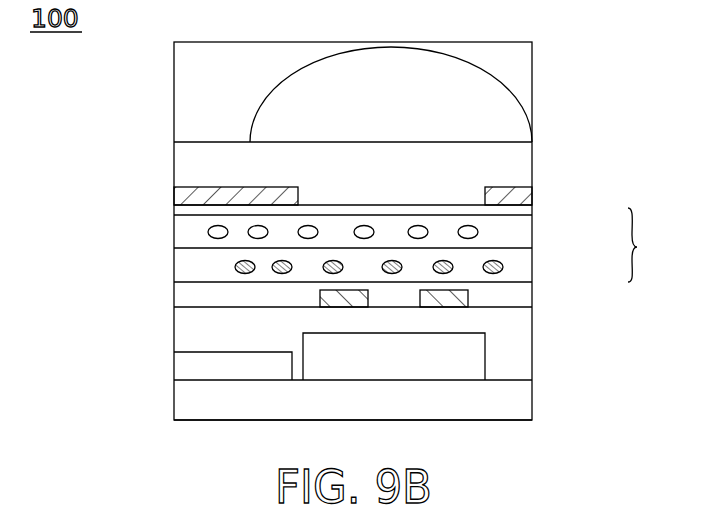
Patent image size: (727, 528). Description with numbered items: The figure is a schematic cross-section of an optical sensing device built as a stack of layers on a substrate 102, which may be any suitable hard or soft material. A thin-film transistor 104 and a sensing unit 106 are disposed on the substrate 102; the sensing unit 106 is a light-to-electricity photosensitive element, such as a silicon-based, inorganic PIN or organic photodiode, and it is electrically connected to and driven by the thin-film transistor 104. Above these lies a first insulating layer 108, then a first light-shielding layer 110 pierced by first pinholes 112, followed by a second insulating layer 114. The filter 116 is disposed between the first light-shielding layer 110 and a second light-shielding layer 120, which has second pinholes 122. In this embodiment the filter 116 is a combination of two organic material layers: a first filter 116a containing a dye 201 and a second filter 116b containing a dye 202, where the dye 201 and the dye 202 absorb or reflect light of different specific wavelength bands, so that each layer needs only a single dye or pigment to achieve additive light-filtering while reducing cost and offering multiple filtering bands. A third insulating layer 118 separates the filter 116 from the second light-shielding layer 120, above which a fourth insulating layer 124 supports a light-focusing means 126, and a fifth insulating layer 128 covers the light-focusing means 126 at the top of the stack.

The substrate 102 is at (527, 400).
The thin-film transistor 104 is at (185, 366).
The sensing unit 106 is at (418, 369).
The first insulating layer 108 is at (527, 360).
The first light-shielding layer 110 is at (465, 298).
The first pinholes 112 is at (392, 295).
The second insulating layer 114 is at (527, 297).
The filter 116 is at (659, 245).
The first filter 116a is at (527, 265).
The second filter 116b is at (527, 232).
The third insulating layer 118 is at (525, 211).
The second light-shielding layer 120 is at (510, 183).
The second pinholes 122 is at (360, 191).
The fourth insulating layer 124 is at (522, 157).
The light-focusing means 126 is at (505, 110).
The fifth insulating layer 128 is at (527, 63).
The dye 201 is at (232, 267).
The dye 202 is at (210, 232).